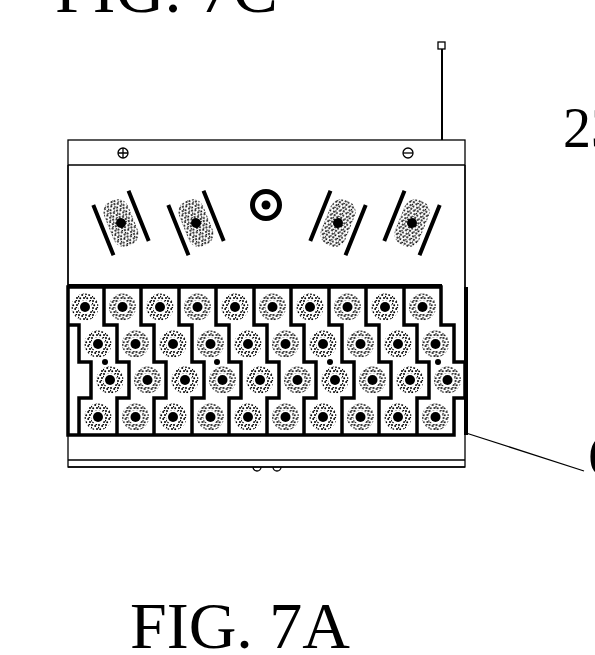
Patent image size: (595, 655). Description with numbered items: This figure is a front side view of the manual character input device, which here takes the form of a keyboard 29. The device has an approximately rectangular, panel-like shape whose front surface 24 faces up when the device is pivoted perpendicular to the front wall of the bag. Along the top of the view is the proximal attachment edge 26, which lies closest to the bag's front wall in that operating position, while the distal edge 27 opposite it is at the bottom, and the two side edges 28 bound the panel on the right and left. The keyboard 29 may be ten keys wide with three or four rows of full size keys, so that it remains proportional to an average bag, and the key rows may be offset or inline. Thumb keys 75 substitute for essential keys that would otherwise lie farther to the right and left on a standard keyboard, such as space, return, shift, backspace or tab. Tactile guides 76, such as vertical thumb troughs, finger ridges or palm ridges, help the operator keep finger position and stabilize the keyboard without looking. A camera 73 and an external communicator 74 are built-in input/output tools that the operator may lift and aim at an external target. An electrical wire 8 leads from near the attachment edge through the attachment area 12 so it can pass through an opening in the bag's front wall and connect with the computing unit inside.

The wire 8 is at (448, 102).
The attachment area 12 is at (332, 153).
The front surface 24 is at (437, 258).
The proximal attachment edge 26 is at (382, 140).
The distal edge 27 is at (379, 468).
The side edge 28 is at (475, 310).
The keyboard 29 is at (332, 363).
The camera 73 is at (255, 468).
The external communicator 74 is at (275, 468).
The thumb keys 75 is at (185, 202).
The tactile guides 76 is at (320, 203).